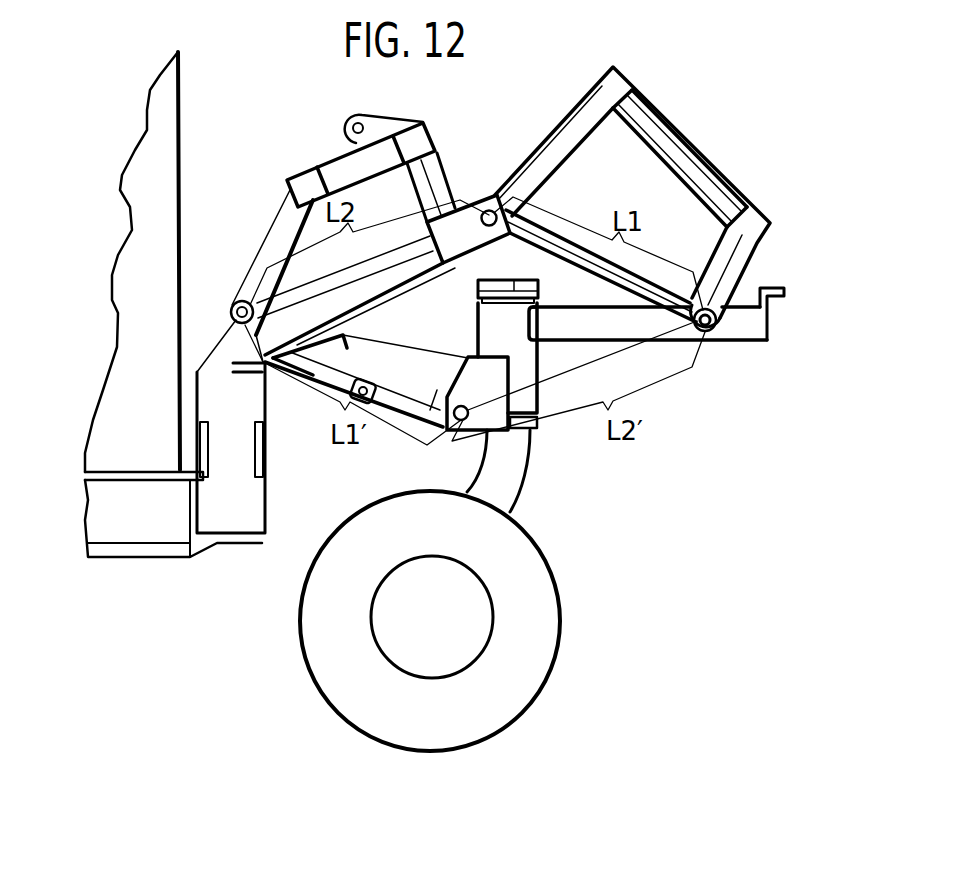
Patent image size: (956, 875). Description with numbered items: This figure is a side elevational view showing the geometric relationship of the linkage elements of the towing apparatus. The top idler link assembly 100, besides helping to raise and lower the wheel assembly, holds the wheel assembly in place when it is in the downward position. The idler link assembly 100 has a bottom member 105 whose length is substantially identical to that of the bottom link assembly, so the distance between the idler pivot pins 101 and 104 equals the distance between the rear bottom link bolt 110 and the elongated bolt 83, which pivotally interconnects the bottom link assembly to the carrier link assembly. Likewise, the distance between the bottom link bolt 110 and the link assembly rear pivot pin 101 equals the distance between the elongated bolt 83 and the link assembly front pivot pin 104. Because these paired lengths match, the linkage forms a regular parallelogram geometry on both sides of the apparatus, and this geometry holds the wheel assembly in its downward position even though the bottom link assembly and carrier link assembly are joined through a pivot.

The top idler link assembly 100 is at (730, 192).
The link assembly rear pivot pin 101 is at (487, 209).
The link assembly front pivot pin 104 is at (708, 334).
The bottom member 105 is at (553, 253).
The rear bottom link bolt 110 is at (230, 304).
The elongated bolt 83 is at (463, 422).